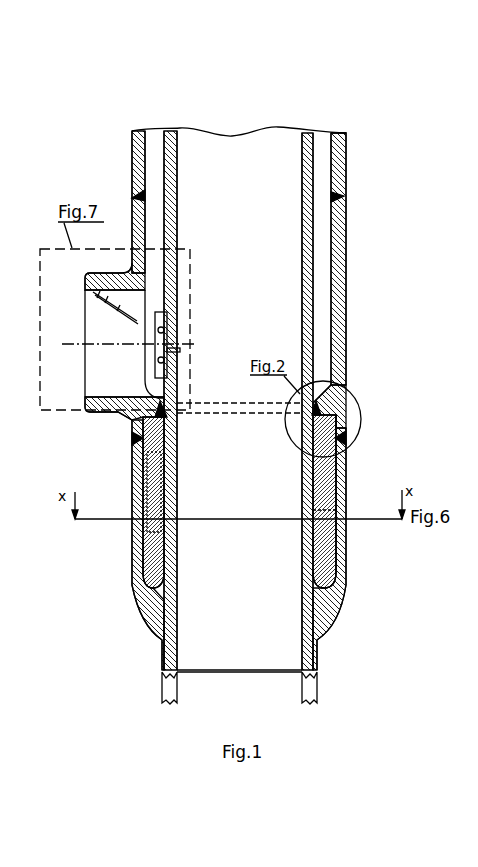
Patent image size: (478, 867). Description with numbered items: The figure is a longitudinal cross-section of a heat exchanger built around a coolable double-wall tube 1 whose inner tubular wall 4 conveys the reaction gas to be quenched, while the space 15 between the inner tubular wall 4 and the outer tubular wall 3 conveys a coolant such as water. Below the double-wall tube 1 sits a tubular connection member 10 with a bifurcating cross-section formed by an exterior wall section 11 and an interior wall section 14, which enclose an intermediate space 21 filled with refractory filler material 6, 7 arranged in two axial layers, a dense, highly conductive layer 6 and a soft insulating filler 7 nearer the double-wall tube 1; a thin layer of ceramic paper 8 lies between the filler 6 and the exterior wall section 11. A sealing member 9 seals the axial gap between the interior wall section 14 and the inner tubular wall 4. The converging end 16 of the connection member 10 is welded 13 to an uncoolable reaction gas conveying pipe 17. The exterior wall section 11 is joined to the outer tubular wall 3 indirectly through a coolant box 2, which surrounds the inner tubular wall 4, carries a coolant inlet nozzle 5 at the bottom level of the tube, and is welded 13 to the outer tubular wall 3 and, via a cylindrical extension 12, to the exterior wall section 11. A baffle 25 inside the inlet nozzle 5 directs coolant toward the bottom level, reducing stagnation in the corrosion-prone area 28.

The coolable double-wall tube 1 is at (136, 148).
The coolant box 2 is at (339, 304).
The outer tubular wall 3 is at (338, 159).
The inner tubular wall 4 is at (170, 271).
The coolant inlet nozzle 5 is at (93, 383).
The refractory filler material 6 is at (158, 572).
The soft insulating filler 7 is at (157, 452).
The layer of ceramic paper 8 is at (136, 541).
The sealing member 9 is at (306, 410).
The tubular connection member 10 is at (330, 590).
The exterior wall section 11 is at (341, 468).
The cylindrical extension 12 is at (338, 432).
The weld 13 is at (343, 442).
The interior wall section 14 is at (304, 491).
The space 15 is at (319, 143).
The converging end 16 is at (304, 641).
The uncoolable reaction gas conveying pipe 17 is at (169, 690).
The intermediate space 21 is at (146, 493).
The baffle 25 is at (100, 297).
The area 28 is at (319, 390).